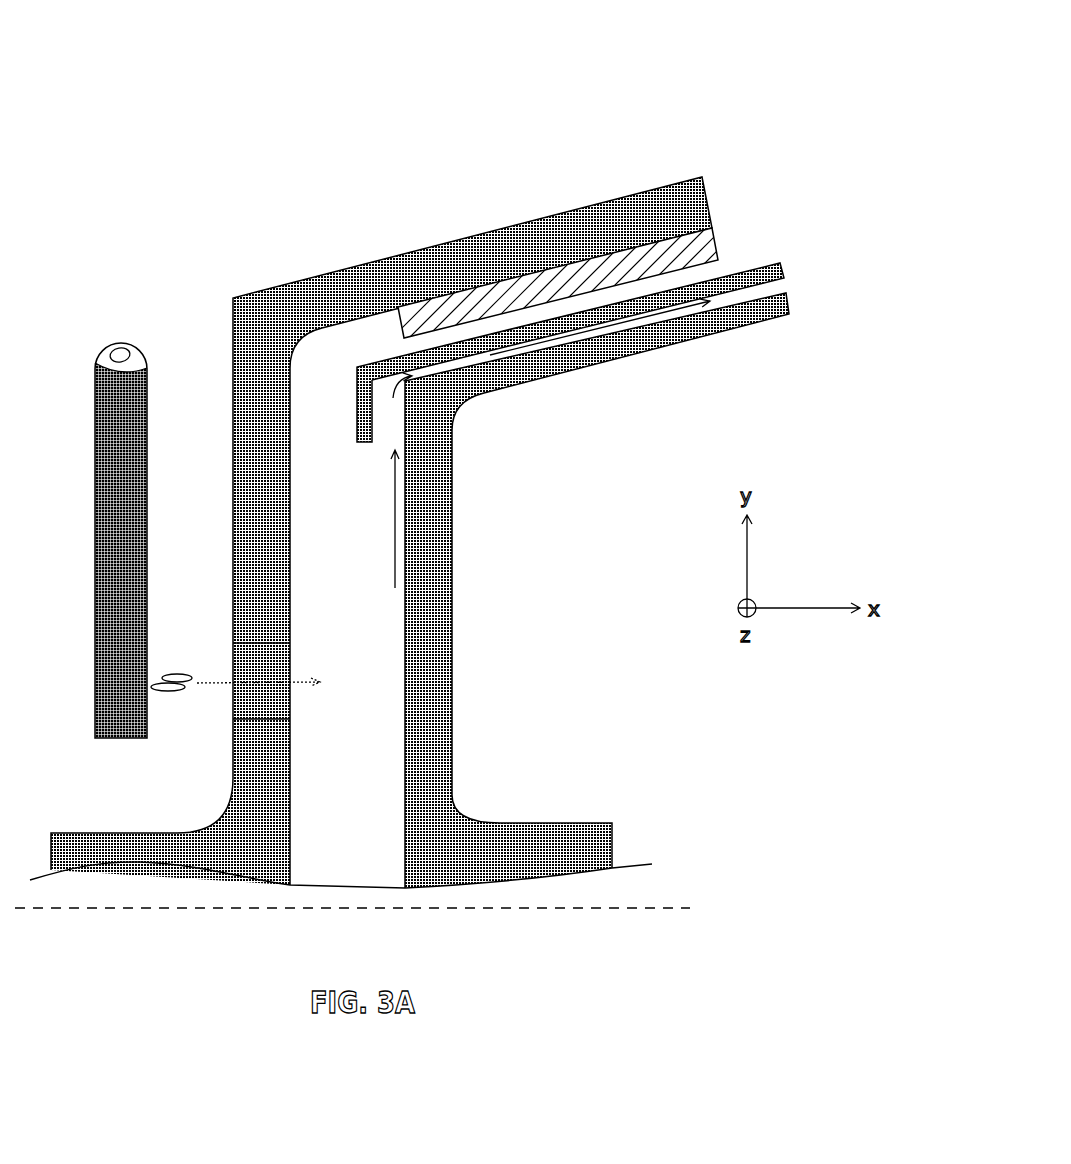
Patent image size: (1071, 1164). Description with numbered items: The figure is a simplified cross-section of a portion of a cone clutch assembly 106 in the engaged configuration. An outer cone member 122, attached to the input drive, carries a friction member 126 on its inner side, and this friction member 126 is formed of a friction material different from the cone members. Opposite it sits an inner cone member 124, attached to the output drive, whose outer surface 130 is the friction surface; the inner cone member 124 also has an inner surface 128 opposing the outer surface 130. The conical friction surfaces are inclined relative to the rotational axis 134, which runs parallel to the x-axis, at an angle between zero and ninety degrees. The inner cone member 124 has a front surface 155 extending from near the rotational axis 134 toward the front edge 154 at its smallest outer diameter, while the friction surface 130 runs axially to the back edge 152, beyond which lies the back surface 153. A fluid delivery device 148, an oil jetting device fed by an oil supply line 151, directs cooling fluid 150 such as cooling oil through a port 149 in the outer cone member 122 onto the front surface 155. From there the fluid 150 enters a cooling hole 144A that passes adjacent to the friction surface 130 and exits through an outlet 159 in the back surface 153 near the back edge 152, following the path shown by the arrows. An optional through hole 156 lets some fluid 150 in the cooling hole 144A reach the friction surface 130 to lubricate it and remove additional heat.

The cone clutch assembly 106 is at (787, 55).
The outer cone member 122 is at (418, 258).
The inner cone member 124 is at (452, 670).
The friction member 126 is at (713, 240).
The inner surface 128 is at (638, 355).
The outer surface 130 is at (578, 312).
The rotational axis 134 is at (377, 914).
The cooling hole 144A is at (458, 367).
The fluid delivery device 148 is at (95, 522).
The port 149 is at (242, 641).
The cooling fluid 150 is at (187, 677).
The oil supply line 151 is at (117, 350).
The back edge 152 is at (783, 262).
The back surface 153 is at (797, 316).
The front edge 154 is at (357, 367).
The front surface 155 is at (403, 710).
The through hole 156 is at (507, 333).
The outlet 159 is at (799, 293).